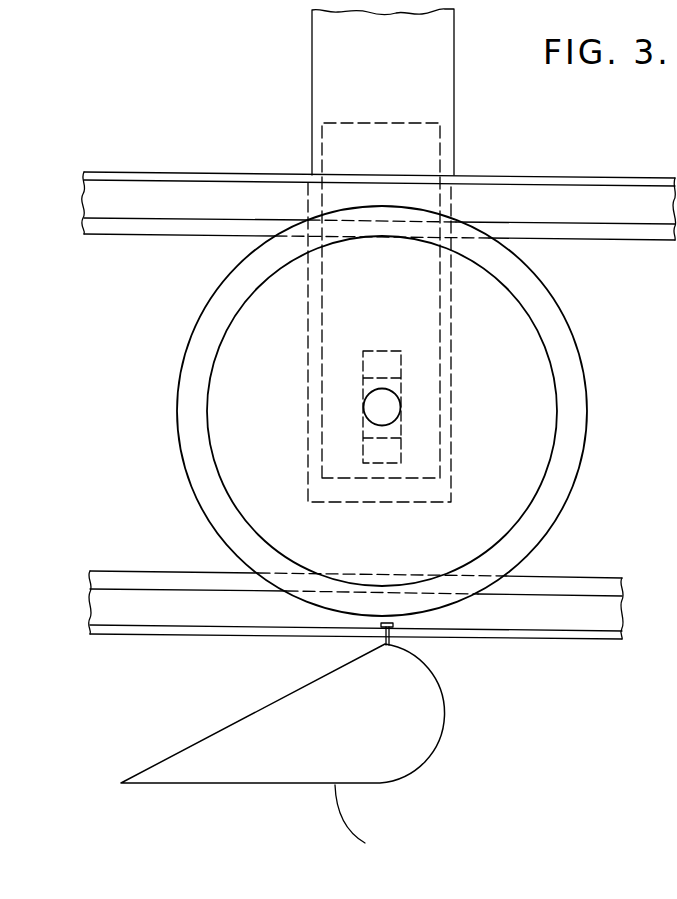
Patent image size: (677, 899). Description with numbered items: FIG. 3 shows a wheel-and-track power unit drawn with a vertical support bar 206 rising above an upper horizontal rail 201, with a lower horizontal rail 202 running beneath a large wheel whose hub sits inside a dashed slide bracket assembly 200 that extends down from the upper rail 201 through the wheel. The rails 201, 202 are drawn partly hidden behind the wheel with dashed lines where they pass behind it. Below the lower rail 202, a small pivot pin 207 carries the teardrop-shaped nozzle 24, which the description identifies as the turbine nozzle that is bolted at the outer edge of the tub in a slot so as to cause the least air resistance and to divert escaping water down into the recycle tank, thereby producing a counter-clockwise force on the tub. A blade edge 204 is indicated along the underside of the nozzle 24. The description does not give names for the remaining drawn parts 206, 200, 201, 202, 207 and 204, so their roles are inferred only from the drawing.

The vertical support bar 206 is at (457, 119).
The slide bracket assembly 200 is at (408, 161).
The upper horizontal rail 201 is at (591, 218).
The lower horizontal rail 202 is at (586, 624).
The pivot pin 207 is at (399, 637).
The nozzle of turbine 24 is at (376, 733).
The blade edge 204 is at (350, 826).